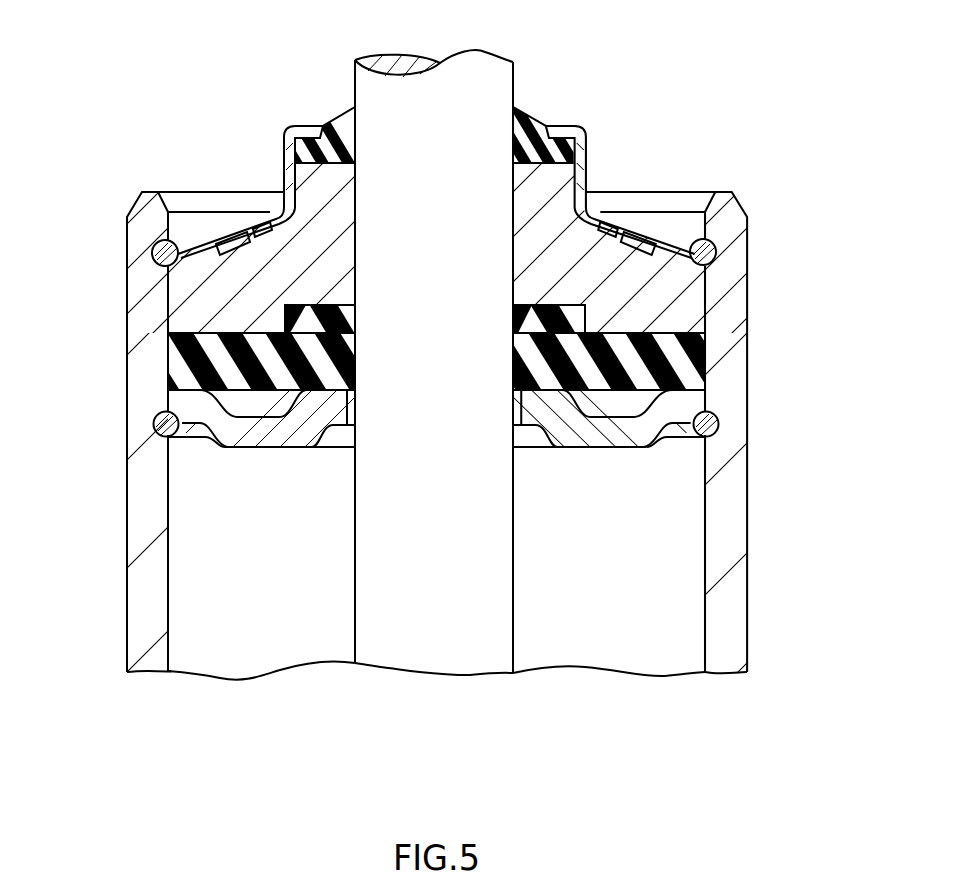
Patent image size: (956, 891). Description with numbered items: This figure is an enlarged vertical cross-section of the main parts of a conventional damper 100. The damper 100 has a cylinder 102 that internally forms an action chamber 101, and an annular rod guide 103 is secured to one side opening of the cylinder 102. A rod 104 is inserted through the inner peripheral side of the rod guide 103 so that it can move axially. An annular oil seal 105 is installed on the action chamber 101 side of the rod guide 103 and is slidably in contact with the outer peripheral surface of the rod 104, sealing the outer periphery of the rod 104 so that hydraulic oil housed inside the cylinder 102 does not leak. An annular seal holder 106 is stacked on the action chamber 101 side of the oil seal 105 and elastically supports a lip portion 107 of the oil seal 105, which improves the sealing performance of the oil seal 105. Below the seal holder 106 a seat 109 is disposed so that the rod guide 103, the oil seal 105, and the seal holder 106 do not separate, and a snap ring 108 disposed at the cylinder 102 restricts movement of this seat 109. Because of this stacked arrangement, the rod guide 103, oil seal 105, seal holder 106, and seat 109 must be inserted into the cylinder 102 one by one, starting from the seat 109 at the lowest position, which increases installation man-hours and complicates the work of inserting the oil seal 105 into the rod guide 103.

The damper 100 is at (648, 172).
The action chamber 101 is at (217, 583).
The cylinder 102 is at (127, 512).
The rod guide 103 is at (320, 227).
The rod 104 is at (513, 83).
The oil seal 105 is at (597, 302).
The seal holder 106 is at (690, 372).
The lip portion 107 is at (298, 448).
The snap ring 108 is at (712, 432).
The seat 109 is at (700, 402).